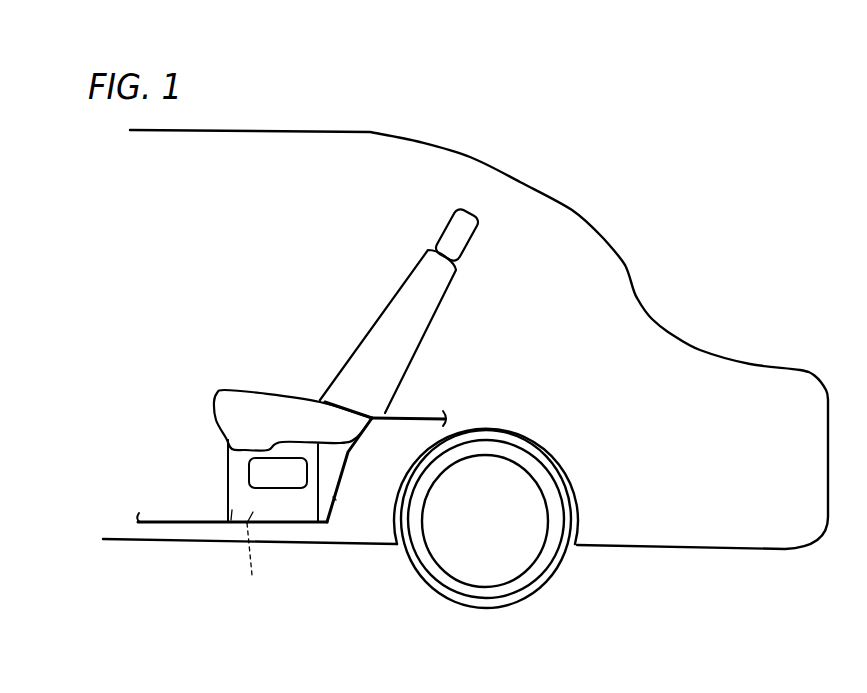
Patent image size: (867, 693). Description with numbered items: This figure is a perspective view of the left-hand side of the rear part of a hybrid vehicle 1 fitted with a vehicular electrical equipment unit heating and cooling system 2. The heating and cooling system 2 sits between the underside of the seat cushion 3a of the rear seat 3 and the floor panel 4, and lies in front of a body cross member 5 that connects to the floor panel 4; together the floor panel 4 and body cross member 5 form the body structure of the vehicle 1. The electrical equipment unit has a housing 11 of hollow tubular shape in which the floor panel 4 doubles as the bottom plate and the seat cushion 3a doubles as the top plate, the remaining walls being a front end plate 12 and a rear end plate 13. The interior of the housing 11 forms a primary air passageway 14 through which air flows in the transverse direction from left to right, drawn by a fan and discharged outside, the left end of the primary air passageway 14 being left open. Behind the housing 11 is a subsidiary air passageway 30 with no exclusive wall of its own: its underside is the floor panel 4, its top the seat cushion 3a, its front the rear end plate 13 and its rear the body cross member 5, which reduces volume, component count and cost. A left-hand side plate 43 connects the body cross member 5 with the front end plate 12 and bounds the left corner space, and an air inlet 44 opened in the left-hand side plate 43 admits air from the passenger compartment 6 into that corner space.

The hybrid vehicle 1 is at (613, 224).
The heating and cooling system 2 is at (217, 524).
The rear seat 3 is at (370, 336).
The seat cushion 3a is at (270, 394).
The floor panel 4 is at (177, 521).
The body cross member 5 is at (333, 497).
The passenger compartment 6 is at (258, 294).
The housing 11 is at (225, 446).
The front end plate 12 is at (227, 480).
The rear end plate 13 is at (313, 503).
The primary air passageway 14 is at (248, 558).
The subsidiary air passageway 30 is at (330, 460).
The left-hand side plate 43 is at (235, 505).
The air inlet 44 is at (276, 488).